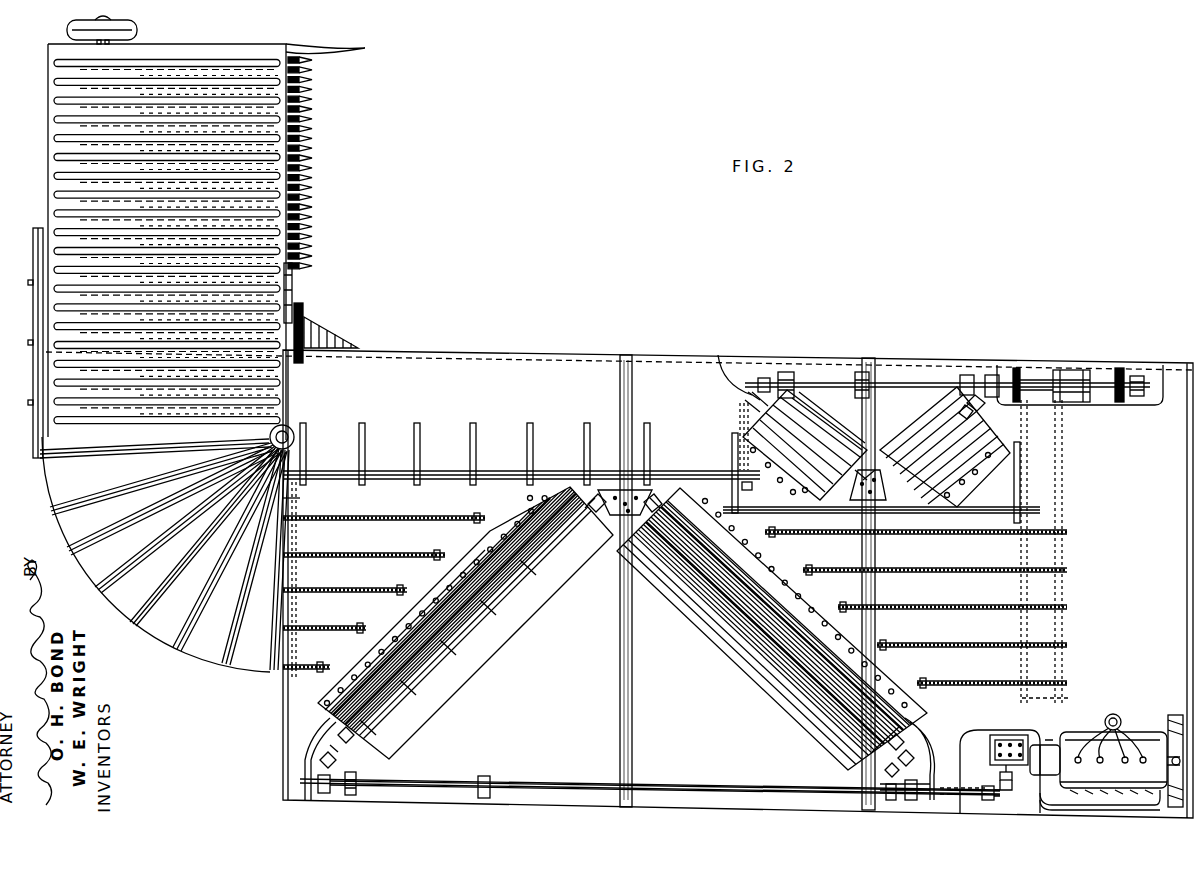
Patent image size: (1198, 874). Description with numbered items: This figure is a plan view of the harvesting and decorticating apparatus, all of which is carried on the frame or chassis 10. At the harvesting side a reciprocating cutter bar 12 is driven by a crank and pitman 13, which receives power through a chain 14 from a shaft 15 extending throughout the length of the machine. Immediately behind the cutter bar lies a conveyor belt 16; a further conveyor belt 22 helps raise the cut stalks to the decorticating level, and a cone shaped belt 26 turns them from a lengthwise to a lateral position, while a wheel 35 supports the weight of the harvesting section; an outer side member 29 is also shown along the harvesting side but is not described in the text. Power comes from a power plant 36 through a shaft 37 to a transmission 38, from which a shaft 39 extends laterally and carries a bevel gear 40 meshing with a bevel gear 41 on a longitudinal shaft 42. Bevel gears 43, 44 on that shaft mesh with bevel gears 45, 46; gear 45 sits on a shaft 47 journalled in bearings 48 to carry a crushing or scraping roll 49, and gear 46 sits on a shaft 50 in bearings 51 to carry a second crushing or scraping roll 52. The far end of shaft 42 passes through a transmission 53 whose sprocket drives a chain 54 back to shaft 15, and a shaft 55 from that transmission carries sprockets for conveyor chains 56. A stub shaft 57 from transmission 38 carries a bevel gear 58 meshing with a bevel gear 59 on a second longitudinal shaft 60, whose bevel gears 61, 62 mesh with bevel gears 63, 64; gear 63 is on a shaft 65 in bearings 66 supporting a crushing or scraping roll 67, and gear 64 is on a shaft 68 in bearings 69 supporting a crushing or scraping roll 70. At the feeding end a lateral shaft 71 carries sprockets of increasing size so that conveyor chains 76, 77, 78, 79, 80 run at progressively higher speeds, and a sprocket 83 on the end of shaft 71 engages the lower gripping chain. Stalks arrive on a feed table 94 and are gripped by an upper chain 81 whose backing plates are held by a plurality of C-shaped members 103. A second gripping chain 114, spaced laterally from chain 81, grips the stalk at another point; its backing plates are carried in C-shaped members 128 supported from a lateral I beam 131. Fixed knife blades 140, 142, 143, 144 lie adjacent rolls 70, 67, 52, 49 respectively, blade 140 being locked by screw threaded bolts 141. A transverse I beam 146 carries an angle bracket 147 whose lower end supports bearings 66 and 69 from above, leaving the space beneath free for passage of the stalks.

The frame or chassis 10 is at (450, 350).
The reciprocating cutter bar 12 is at (310, 208).
The crank and pitman 13 is at (292, 300).
The chain 14 is at (311, 322).
The shaft 15 is at (520, 350).
The conveyor belt 16 is at (60, 90).
The conveyor belt 22 is at (268, 384).
The cone shaped belt 26 is at (212, 655).
The guide bar 29 is at (34, 262).
The wheel 35 is at (137, 28).
The power plant 36 is at (1150, 738).
The shaft 37 is at (1035, 745).
The transmission 38 is at (1005, 735).
The shaft 39 is at (1060, 698).
The bevel gear 40 is at (1043, 405).
The bevel gear 41 is at (1018, 367).
The shaft 42 is at (1042, 378).
The bevel gear 43 is at (965, 372).
The bevel gear 44 is at (768, 372).
The bevel gear 45 is at (990, 374).
The bevel gear 46 is at (758, 378).
The shaft 47 is at (988, 402).
The bearings 48 is at (982, 412).
The crushing or scraping roll 49 is at (918, 420).
The shaft 50 is at (750, 405).
The bearings 51 is at (752, 416).
The crushing or scraping roll 52 is at (832, 432).
The transmission 53 is at (1075, 370).
The chain 54 is at (1122, 367).
The shaft 55 is at (1062, 470).
The conveyor chains 56 is at (940, 612).
The stub shaft 57 is at (1012, 778).
The bevel gear 58 is at (985, 772).
The bevel gear 59 is at (994, 800).
The shaft 60 is at (716, 780).
The bevel gear 61 is at (880, 793).
The bevel gear 62 is at (335, 783).
The bevel gear 63 is at (900, 770).
The bevel gear 64 is at (318, 760).
The shaft 65 is at (900, 745).
The bearings 66 is at (650, 492).
The crushing or scraping roll 67 is at (768, 683).
The shaft 68 is at (334, 740).
The bearings 69 is at (598, 492).
The crushing or scraping roll 70 is at (470, 666).
The shaft 71 is at (300, 535).
The conveyor chain 76 is at (398, 518).
The conveyor chain 77 is at (398, 555).
The conveyor chain 78 is at (378, 590).
The conveyor chain 79 is at (350, 628).
The conveyor chain 80 is at (298, 670).
The upper chain 81 is at (452, 470).
The sprocket 83 is at (745, 448).
The feed table 94 is at (300, 498).
The C-shaped members 103 is at (414, 432).
The chain 114 is at (1004, 534).
The C-shaped members 128 is at (742, 472).
The I beam 131 is at (876, 584).
The fixed knife blade 140 is at (527, 498).
The screw threaded bolts 141 is at (478, 556).
The fixed knife blade 142 is at (812, 608).
The fixed knife blade 143 is at (805, 495).
The fixed knife blade 144 is at (960, 480).
The I beam 146 is at (630, 693).
The angle bracket 147 is at (640, 490).